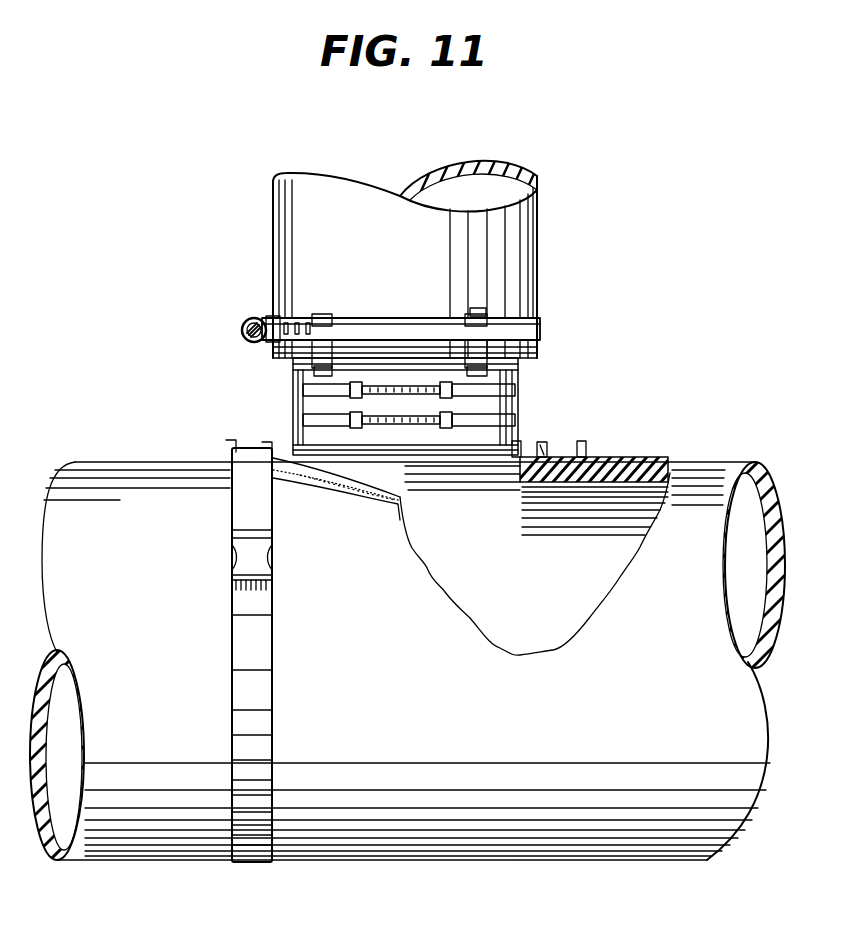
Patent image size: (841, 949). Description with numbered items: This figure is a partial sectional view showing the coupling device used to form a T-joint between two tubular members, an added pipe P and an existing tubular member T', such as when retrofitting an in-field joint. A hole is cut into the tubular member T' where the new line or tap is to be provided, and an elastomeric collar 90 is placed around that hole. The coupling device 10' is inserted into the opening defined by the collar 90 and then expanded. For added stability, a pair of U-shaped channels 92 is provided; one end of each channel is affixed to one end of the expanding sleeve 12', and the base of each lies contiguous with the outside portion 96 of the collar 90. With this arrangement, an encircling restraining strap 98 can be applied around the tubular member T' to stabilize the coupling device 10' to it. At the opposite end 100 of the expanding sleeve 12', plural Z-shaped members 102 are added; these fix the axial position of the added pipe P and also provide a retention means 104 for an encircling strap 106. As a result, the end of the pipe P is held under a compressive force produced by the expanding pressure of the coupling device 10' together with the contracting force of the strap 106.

The pipe P is at (550, 238).
The tubular member T' is at (410, 674).
The coupling device 10' is at (463, 402).
The expanding sleeve 12' is at (449, 402).
The elastomeric collar 90 is at (585, 460).
The U-shaped channels 92 is at (292, 447).
The outside portion of collar 96 is at (544, 455).
The encircling restraining strap 98 is at (240, 517).
The opposite end of expanding sleeve 100 is at (413, 321).
The Z-shaped members 102 is at (474, 314).
The retention means 104 is at (480, 310).
The encircling strap 106 is at (542, 332).